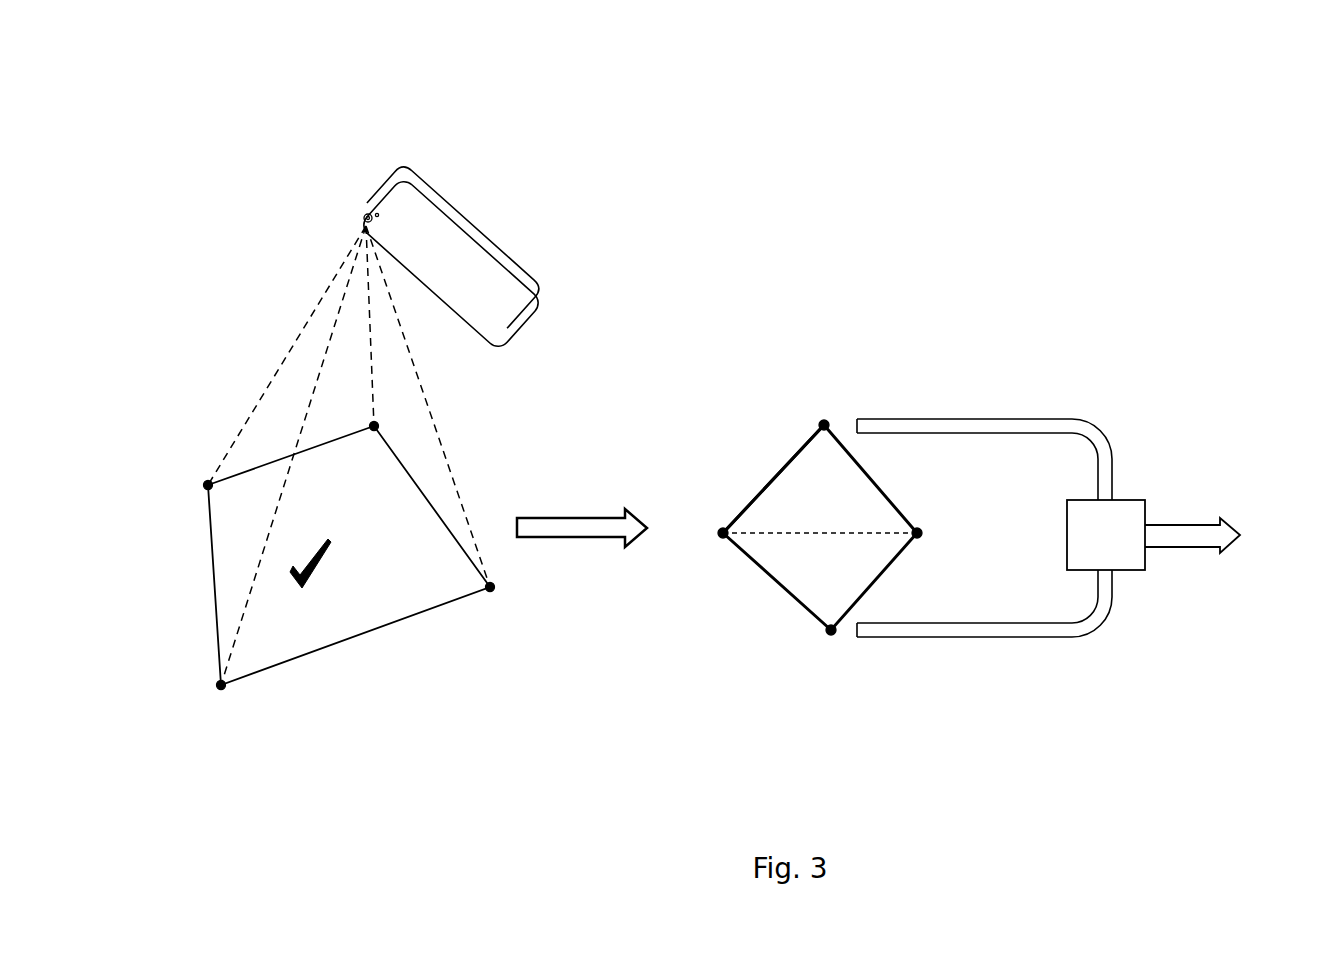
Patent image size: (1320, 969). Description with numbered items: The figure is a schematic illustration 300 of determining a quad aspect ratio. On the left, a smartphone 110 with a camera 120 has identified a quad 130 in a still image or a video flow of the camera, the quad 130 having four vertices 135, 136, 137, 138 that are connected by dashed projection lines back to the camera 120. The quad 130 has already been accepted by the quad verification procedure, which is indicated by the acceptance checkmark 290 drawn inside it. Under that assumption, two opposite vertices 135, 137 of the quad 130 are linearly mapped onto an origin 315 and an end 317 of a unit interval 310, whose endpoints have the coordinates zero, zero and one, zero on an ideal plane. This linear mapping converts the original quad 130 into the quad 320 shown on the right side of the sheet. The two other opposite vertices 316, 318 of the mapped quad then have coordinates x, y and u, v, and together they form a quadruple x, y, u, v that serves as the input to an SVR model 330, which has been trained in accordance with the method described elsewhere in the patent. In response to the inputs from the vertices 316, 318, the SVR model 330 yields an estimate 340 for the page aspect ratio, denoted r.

The smartphone 110 is at (394, 174).
The camera 120 is at (355, 216).
The quad 130 is at (342, 655).
The vertex 135 is at (207, 492).
The vertex 136 is at (363, 420).
The vertex 137 is at (490, 600).
The vertex 138 is at (220, 690).
The acceptance checkmark 290 is at (333, 553).
The schematic illustration 300 is at (1266, 138).
The unit interval 310 is at (793, 541).
The origin 315 is at (715, 532).
The vertex 316 is at (835, 421).
The end 317 is at (925, 530).
The vertex 318 is at (838, 637).
The quad 320 is at (762, 477).
The SVR model 330 is at (1150, 505).
The estimate 340 is at (1258, 558).